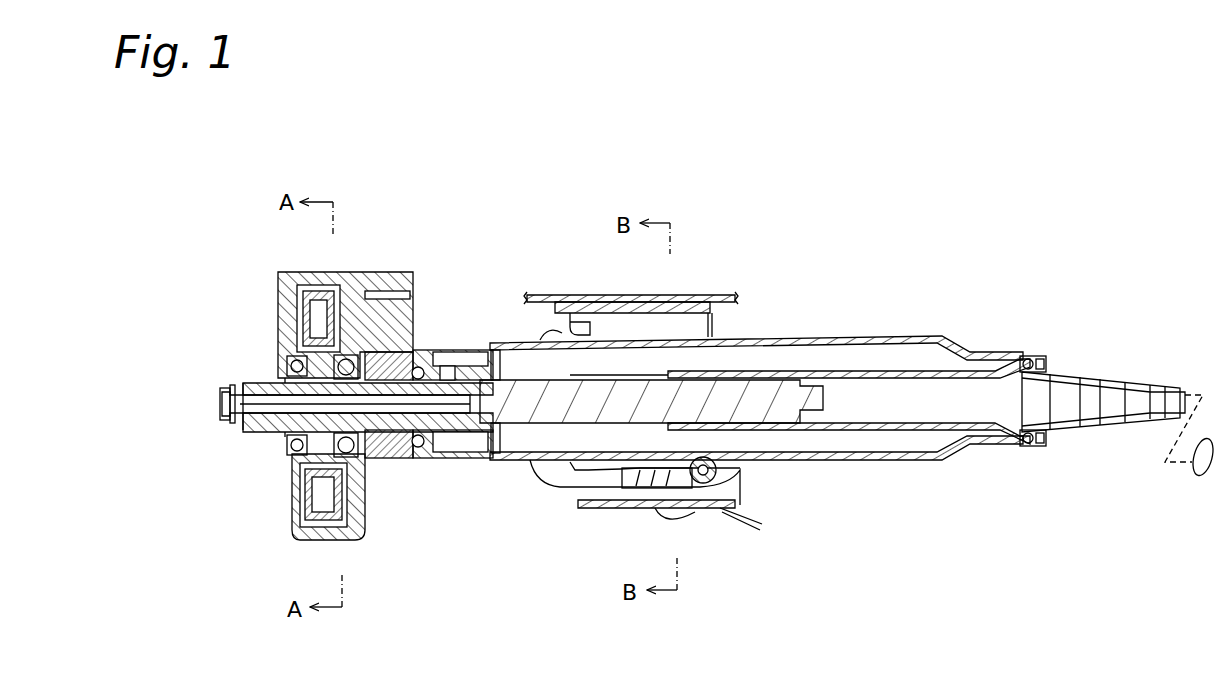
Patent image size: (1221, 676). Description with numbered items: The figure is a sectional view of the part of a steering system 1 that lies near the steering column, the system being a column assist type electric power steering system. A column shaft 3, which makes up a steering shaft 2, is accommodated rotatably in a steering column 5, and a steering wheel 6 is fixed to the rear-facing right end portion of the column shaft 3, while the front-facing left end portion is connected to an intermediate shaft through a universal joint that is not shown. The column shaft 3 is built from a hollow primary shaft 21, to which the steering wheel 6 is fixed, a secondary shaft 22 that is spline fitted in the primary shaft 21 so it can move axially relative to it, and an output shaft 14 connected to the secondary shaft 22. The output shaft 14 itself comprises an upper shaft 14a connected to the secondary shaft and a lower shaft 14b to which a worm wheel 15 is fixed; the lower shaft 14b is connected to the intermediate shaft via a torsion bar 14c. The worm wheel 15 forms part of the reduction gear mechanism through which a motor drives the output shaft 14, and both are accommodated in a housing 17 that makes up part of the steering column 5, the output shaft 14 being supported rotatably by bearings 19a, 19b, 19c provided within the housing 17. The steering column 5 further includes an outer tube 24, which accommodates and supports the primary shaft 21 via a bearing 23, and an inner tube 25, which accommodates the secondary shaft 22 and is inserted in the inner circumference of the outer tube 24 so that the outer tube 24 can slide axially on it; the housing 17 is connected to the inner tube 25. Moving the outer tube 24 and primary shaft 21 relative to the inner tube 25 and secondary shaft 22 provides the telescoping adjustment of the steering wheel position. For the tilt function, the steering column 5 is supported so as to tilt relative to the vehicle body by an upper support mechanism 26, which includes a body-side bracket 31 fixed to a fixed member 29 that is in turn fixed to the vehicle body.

The steering system 1 is at (1062, 172).
The steering shaft 2 is at (1101, 402).
The column shaft 3 is at (1068, 364).
The steering column 5 is at (756, 381).
The steering wheel 6 is at (1198, 478).
The output shaft 14 is at (224, 392).
The upper shaft 14a is at (440, 362).
The lower shaft 14b is at (274, 384).
The torsion bar 14c is at (283, 413).
The worm wheel 15 is at (316, 540).
The housing 17 is at (381, 272).
The bearing 19a is at (433, 460).
The bearing 19b is at (370, 458).
The bearing 19c is at (290, 470).
The primary shaft 21 is at (888, 432).
The secondary shaft 22 is at (518, 428).
The bearing 23 is at (1022, 357).
The outer tube 24 is at (826, 337).
The inner tube 25 is at (744, 343).
The upper support mechanism 26 is at (688, 298).
The fixed member 29 is at (536, 295).
The body-side bracket 31 is at (590, 302).